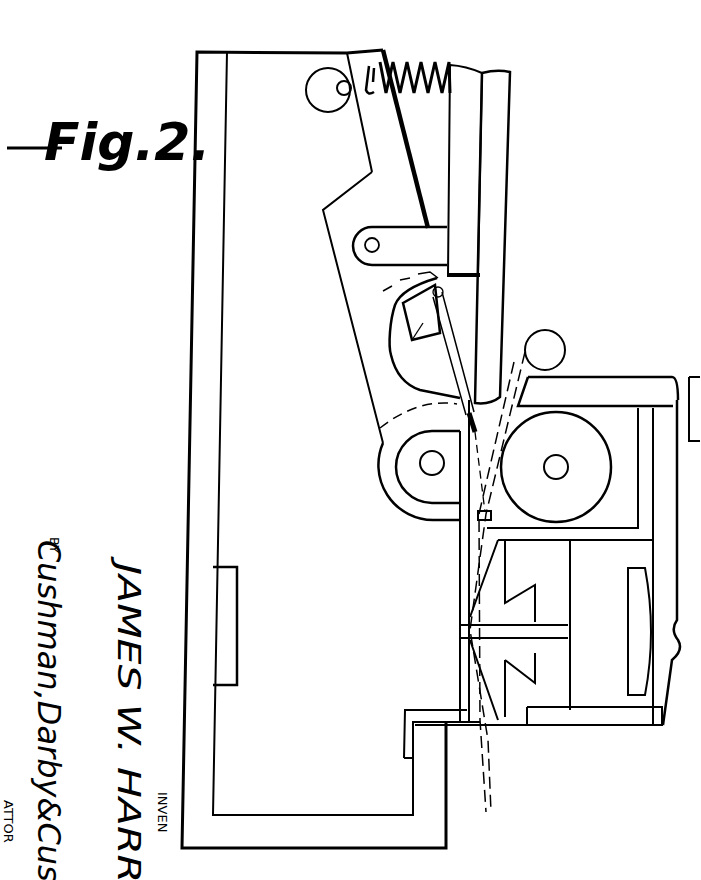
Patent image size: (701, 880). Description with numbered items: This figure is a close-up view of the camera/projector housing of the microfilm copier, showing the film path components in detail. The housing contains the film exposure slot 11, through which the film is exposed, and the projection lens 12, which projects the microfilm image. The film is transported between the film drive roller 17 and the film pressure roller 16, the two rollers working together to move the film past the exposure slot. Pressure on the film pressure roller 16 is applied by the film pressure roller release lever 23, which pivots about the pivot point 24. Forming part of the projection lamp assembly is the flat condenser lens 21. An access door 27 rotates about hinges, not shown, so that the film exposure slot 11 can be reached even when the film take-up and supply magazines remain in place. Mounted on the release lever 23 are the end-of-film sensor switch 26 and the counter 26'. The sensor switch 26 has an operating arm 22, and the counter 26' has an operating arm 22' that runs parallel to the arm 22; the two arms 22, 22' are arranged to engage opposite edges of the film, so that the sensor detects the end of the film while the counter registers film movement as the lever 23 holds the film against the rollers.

The film exposure slot 11 is at (460, 625).
The projection lens 12 is at (236, 673).
The film pressure roller 16 is at (380, 483).
The film drive roller 17 is at (587, 422).
The flat condenser lens 21 is at (650, 683).
The operating arm 22 is at (440, 490).
The operating arm 22' is at (466, 582).
The film pressure roller release lever 23 is at (363, 137).
The pivot point 24 is at (367, 247).
The end-of-film sensor switch 26 is at (386, 355).
The counter 26' is at (396, 295).
The access door 27 is at (227, 82).